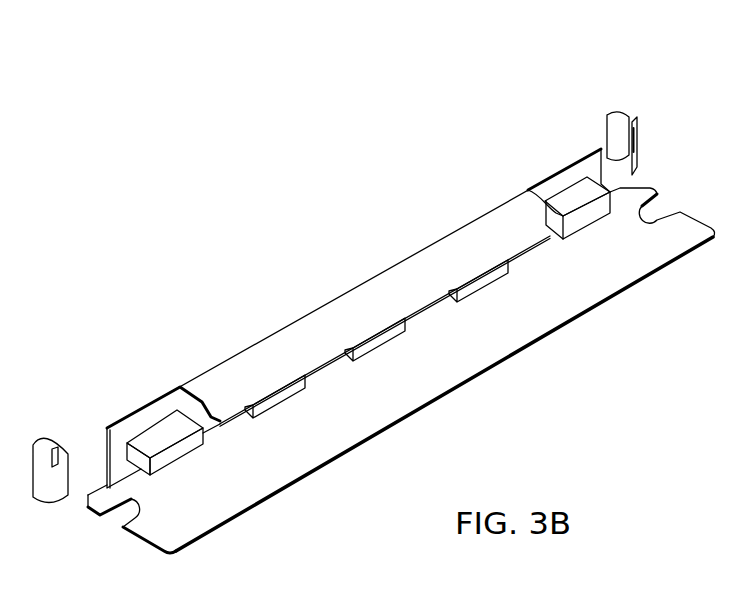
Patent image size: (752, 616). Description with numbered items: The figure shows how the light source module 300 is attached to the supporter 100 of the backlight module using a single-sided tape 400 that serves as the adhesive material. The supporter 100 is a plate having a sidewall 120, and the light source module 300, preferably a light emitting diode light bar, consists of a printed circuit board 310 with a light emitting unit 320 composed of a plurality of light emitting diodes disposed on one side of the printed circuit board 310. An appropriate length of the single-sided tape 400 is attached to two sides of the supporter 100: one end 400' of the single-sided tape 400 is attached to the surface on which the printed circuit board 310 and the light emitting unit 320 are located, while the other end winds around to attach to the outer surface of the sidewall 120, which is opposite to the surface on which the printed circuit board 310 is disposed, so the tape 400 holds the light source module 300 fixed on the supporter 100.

The supporter 100 is at (518, 322).
The sidewall 120 is at (167, 394).
The light source module 300 is at (358, 374).
The printed circuit board 310 is at (192, 407).
The light emitting unit 320 is at (147, 443).
The single-sided tape 400 is at (359, 260).
The one end of the single-sided tape 400' is at (373, 264).